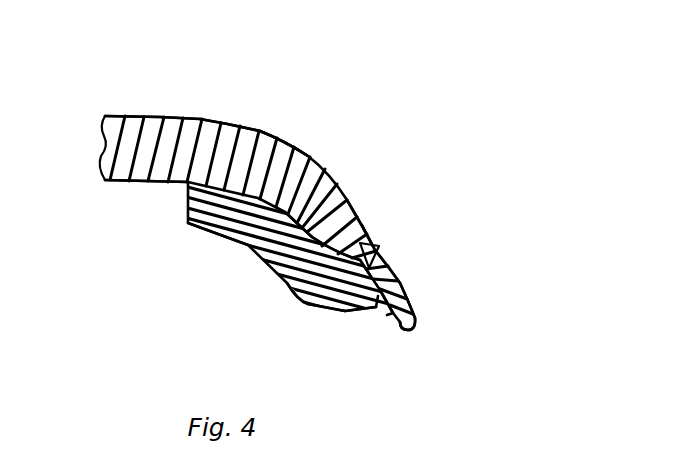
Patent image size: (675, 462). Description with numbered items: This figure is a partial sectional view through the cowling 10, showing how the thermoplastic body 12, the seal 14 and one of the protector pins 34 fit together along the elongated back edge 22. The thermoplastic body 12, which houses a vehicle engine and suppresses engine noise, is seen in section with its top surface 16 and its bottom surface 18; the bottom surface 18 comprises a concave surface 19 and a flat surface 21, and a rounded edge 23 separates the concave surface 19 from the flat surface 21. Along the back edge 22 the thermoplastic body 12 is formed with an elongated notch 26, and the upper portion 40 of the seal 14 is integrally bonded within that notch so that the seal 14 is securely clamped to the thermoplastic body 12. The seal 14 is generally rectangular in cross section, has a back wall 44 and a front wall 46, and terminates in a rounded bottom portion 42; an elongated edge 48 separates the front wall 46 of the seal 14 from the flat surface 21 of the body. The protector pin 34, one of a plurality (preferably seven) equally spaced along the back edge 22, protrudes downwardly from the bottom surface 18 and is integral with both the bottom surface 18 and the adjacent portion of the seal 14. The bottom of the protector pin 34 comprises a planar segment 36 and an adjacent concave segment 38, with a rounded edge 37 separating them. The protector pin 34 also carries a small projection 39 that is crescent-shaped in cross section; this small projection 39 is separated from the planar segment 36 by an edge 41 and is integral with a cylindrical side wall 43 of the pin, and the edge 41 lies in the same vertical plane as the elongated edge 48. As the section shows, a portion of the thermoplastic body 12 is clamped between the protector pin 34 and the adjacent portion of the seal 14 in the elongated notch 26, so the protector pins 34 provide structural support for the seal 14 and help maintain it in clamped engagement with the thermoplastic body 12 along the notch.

The cowling 10 is at (396, 95).
The thermoplastic body 12 is at (262, 112).
The seal 14 is at (438, 332).
The top surface 16 is at (175, 104).
The bottom surface 18 is at (136, 200).
The concave surface 19 is at (308, 201).
The flat surface 21 is at (343, 226).
The elongated back edge 22 is at (411, 211).
The rounded edge 23 is at (350, 236).
The elongated notch 26 is at (389, 220).
The protector pin 34 is at (211, 213).
The planar segment 36 is at (335, 326).
The rounded edge 37 is at (311, 308).
The concave segment 38 is at (243, 262).
The small projection 39 is at (377, 308).
The upper portion 40 is at (390, 236).
The edge 41 is at (370, 316).
The rounded bottom portion 42 is at (408, 320).
The cylindrical side wall 43 is at (387, 315).
The back wall 44 is at (402, 282).
The front wall 46 is at (410, 333).
The elongated edge 48 is at (392, 260).